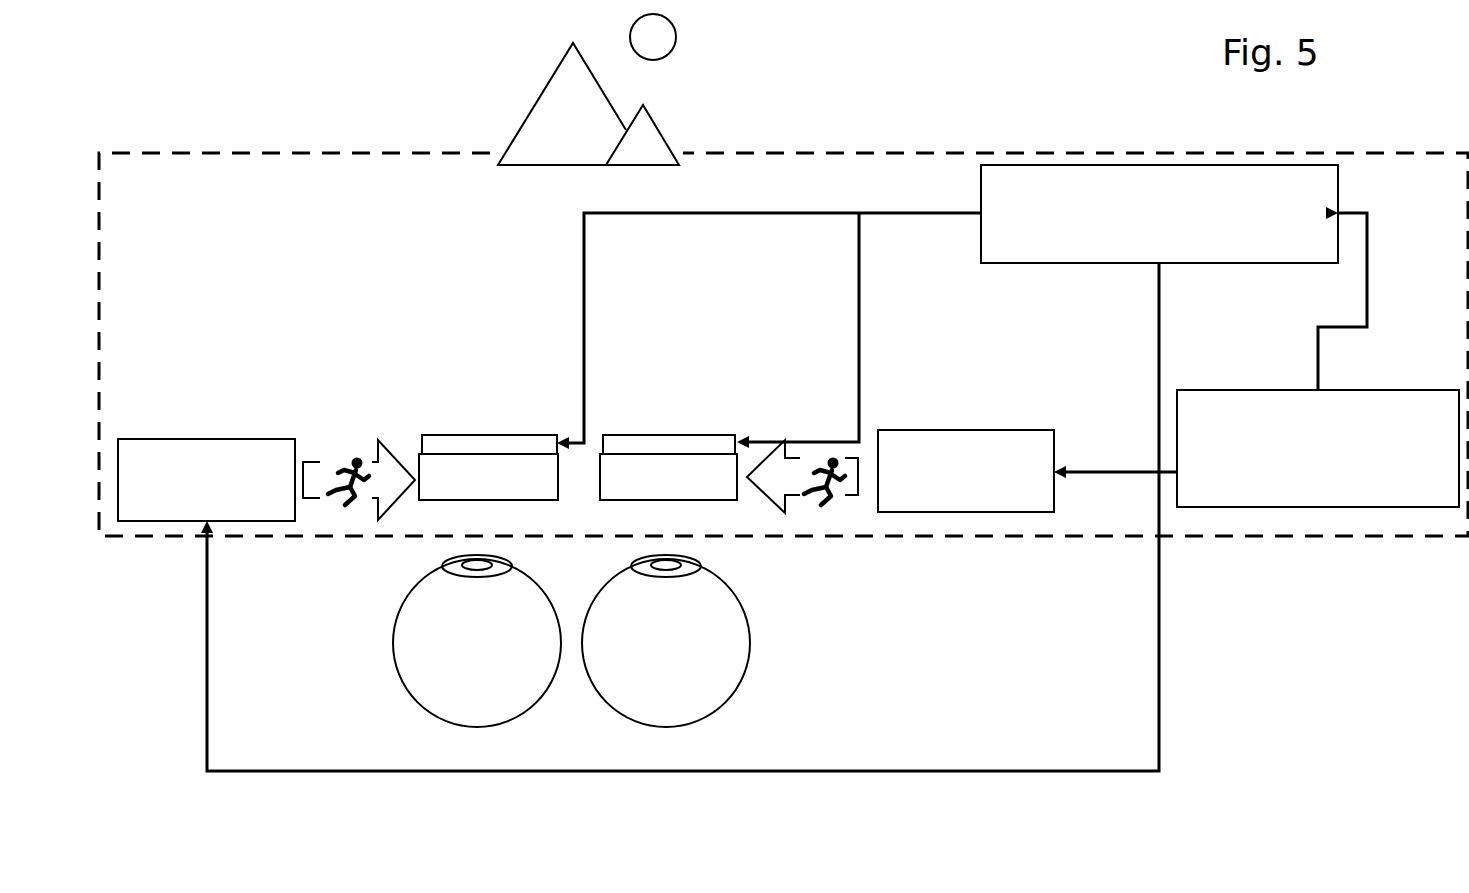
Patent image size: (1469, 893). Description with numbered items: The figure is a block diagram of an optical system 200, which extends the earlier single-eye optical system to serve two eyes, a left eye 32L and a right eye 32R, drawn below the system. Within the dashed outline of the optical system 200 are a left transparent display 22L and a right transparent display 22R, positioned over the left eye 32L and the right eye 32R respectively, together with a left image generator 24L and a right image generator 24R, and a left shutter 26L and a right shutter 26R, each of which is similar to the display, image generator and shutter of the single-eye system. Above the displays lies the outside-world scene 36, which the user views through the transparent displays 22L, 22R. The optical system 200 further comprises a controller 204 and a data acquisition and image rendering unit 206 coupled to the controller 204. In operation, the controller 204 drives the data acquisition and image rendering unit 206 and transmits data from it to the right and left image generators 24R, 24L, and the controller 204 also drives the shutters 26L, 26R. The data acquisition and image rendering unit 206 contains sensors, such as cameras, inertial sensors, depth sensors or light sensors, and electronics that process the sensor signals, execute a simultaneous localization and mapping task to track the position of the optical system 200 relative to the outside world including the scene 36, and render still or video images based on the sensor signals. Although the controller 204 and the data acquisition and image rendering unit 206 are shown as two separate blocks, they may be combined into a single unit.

The optical system 200 is at (343, 150).
The scene 36 is at (665, 108).
The controller 204 is at (1213, 247).
The data acquisition and image rendering (DAIR) unit 206 is at (1285, 507).
The left image generator 24L is at (153, 457).
The right image generator 24R is at (1025, 448).
The left transparent display 22L is at (435, 477).
The right transparent display 22R is at (708, 465).
The left shutter 26L is at (455, 442).
The right shutter 26R is at (702, 440).
The left eye 32L is at (462, 643).
The right eye 32R is at (715, 635).